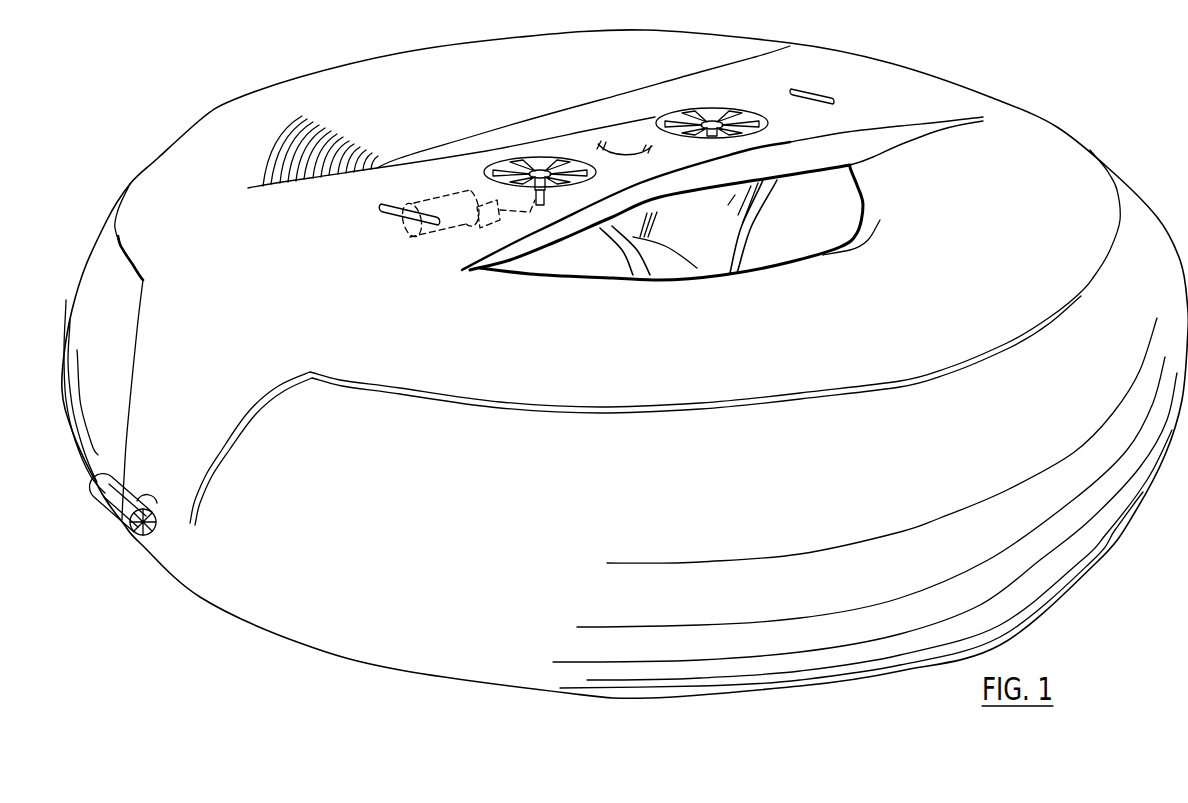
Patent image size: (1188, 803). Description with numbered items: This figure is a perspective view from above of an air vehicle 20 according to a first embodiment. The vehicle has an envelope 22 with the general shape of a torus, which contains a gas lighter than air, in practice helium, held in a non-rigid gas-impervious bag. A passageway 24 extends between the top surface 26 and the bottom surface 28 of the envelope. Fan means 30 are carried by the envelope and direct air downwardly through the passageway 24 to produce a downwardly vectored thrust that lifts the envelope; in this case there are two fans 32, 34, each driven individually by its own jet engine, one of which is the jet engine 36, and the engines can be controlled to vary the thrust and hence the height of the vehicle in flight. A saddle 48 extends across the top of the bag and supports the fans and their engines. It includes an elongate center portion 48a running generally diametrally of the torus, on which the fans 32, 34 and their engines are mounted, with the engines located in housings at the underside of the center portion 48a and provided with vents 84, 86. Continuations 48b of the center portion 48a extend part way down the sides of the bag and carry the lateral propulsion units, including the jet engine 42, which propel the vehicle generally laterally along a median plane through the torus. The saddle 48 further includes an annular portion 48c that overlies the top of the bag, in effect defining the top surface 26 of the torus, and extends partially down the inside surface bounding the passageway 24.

The air vehicle 20 is at (1062, 106).
The envelope 22 is at (1155, 211).
The passageway 24 is at (500, 141).
The top surface 26 is at (977, 230).
The bottom surface 28 is at (1030, 612).
The fan means 30 is at (668, 109).
The fan 32 is at (494, 163).
The fan 34 is at (713, 125).
The jet engine 36 is at (456, 237).
The jet engine 42 is at (116, 528).
The saddle 48 is at (472, 349).
The center portion 48a is at (580, 132).
The continuations 48b is at (180, 470).
The annular portion 48c is at (790, 366).
The vent 84 is at (382, 207).
The vent 86 is at (818, 93).